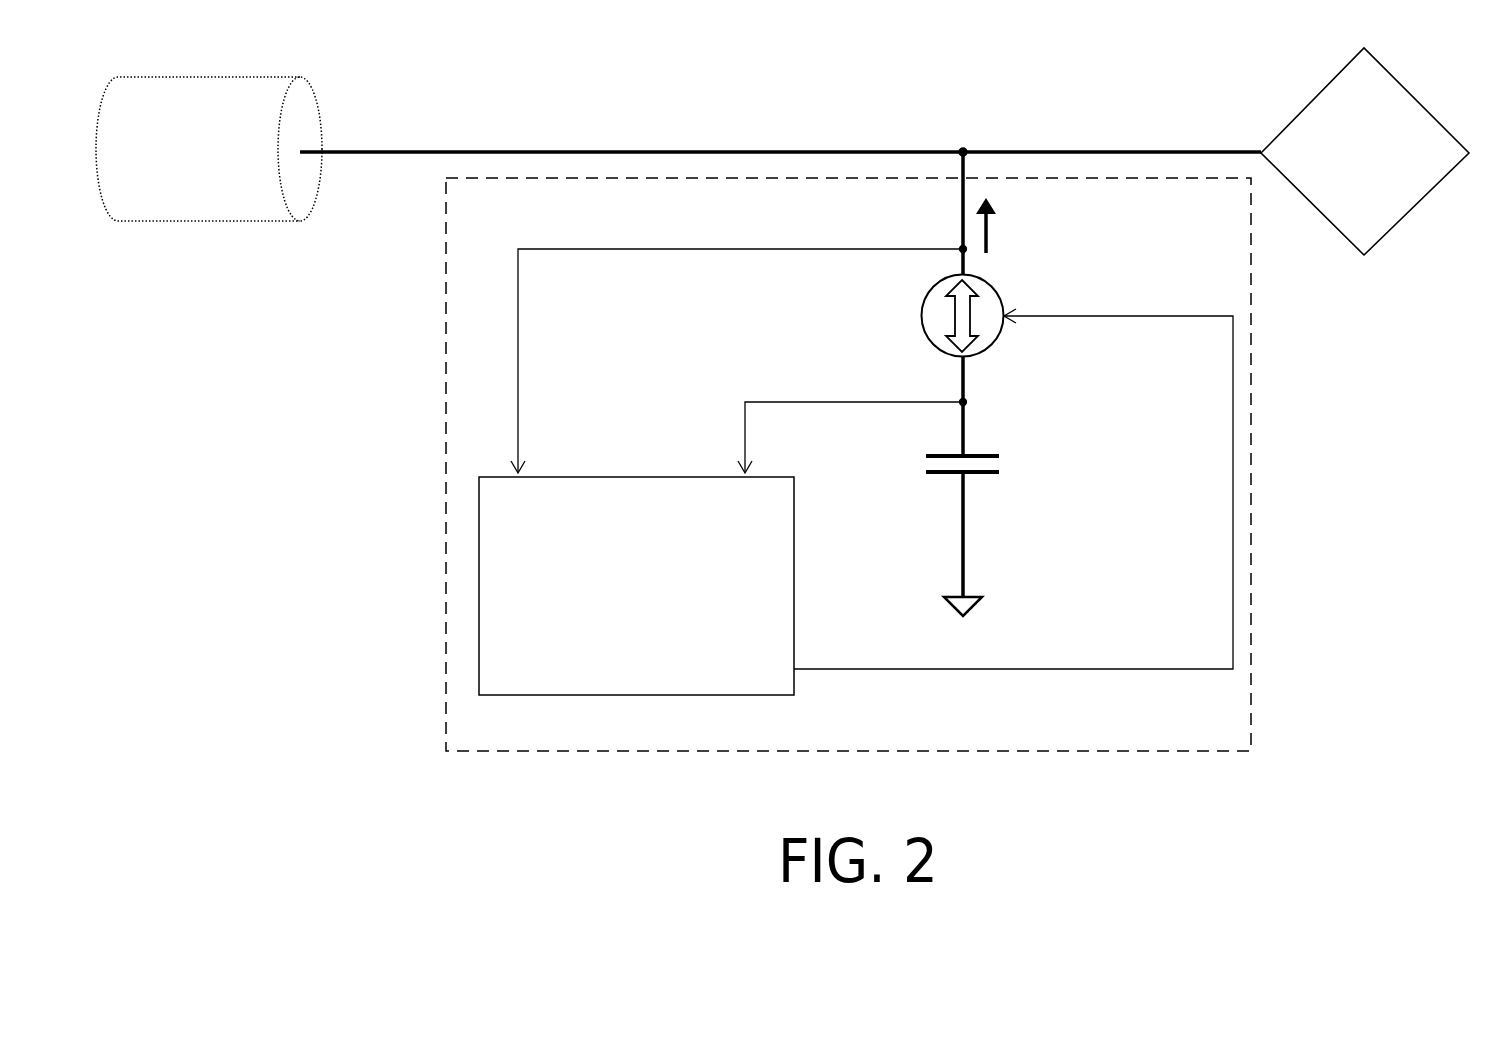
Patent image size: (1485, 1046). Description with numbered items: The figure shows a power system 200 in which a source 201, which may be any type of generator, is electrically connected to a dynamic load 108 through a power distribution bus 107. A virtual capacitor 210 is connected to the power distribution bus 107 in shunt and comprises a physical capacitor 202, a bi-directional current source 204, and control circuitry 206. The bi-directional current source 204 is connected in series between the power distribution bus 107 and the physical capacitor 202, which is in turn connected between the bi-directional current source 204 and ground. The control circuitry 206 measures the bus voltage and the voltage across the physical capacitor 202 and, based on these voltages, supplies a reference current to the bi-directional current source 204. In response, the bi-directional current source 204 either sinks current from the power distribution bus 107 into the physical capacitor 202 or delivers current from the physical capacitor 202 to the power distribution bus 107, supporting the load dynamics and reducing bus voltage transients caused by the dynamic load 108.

The power system 200 is at (925, 70).
The source 201 is at (252, 224).
The power distribution bus 107 is at (1098, 150).
The dynamic load 108 is at (1377, 239).
The virtual capacitor 210 is at (446, 615).
The bi-directional current source 204 is at (998, 341).
The physical capacitor 202 is at (978, 454).
The control circuitry 206 is at (636, 586).